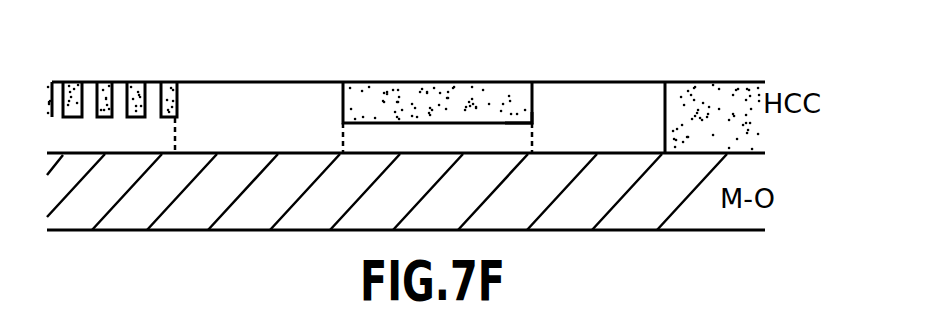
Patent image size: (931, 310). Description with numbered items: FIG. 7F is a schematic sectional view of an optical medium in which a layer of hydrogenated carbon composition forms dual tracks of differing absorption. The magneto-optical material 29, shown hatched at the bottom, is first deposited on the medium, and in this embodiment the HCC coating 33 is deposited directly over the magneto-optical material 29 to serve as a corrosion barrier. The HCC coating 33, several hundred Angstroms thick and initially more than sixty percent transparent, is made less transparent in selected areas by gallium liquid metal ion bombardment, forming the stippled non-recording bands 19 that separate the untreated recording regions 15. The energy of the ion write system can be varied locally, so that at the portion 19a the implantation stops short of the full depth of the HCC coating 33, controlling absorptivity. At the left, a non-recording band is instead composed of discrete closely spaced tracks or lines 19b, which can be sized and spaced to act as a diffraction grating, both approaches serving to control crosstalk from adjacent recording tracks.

The layer 15 is at (243, 87).
The non-recording bands 19 is at (120, 90).
The partial-depth implantation region 19a is at (513, 122).
The discrete closely spaced tracks or lines 19b is at (102, 90).
The magneto-optical material 29 is at (756, 218).
The HCC coating 33 is at (758, 142).